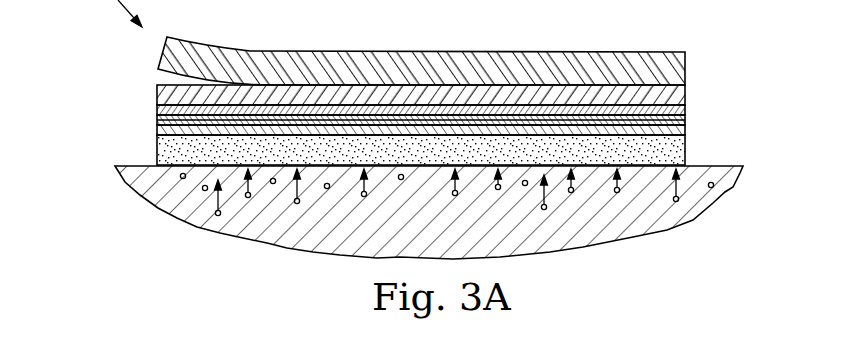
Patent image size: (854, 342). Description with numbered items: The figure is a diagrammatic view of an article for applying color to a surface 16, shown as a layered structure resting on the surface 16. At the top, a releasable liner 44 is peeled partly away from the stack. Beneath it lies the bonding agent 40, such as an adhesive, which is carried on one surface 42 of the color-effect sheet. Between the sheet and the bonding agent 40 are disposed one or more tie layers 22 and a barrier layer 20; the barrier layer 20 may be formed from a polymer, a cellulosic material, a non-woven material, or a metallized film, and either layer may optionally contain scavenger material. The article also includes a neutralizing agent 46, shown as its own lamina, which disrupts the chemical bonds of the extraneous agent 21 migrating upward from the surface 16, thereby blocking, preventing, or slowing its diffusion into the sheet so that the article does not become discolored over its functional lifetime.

The surface 16 is at (673, 213).
The extraneous agent 21 is at (296, 205).
The releasable liner 44 is at (685, 62).
The bonding agent 40 is at (685, 90).
The tie layer 22 is at (685, 105).
The barrier layer 20 is at (685, 118).
The neutralizing agent 46 is at (685, 128).
The surface of the sheet 42 is at (685, 150).